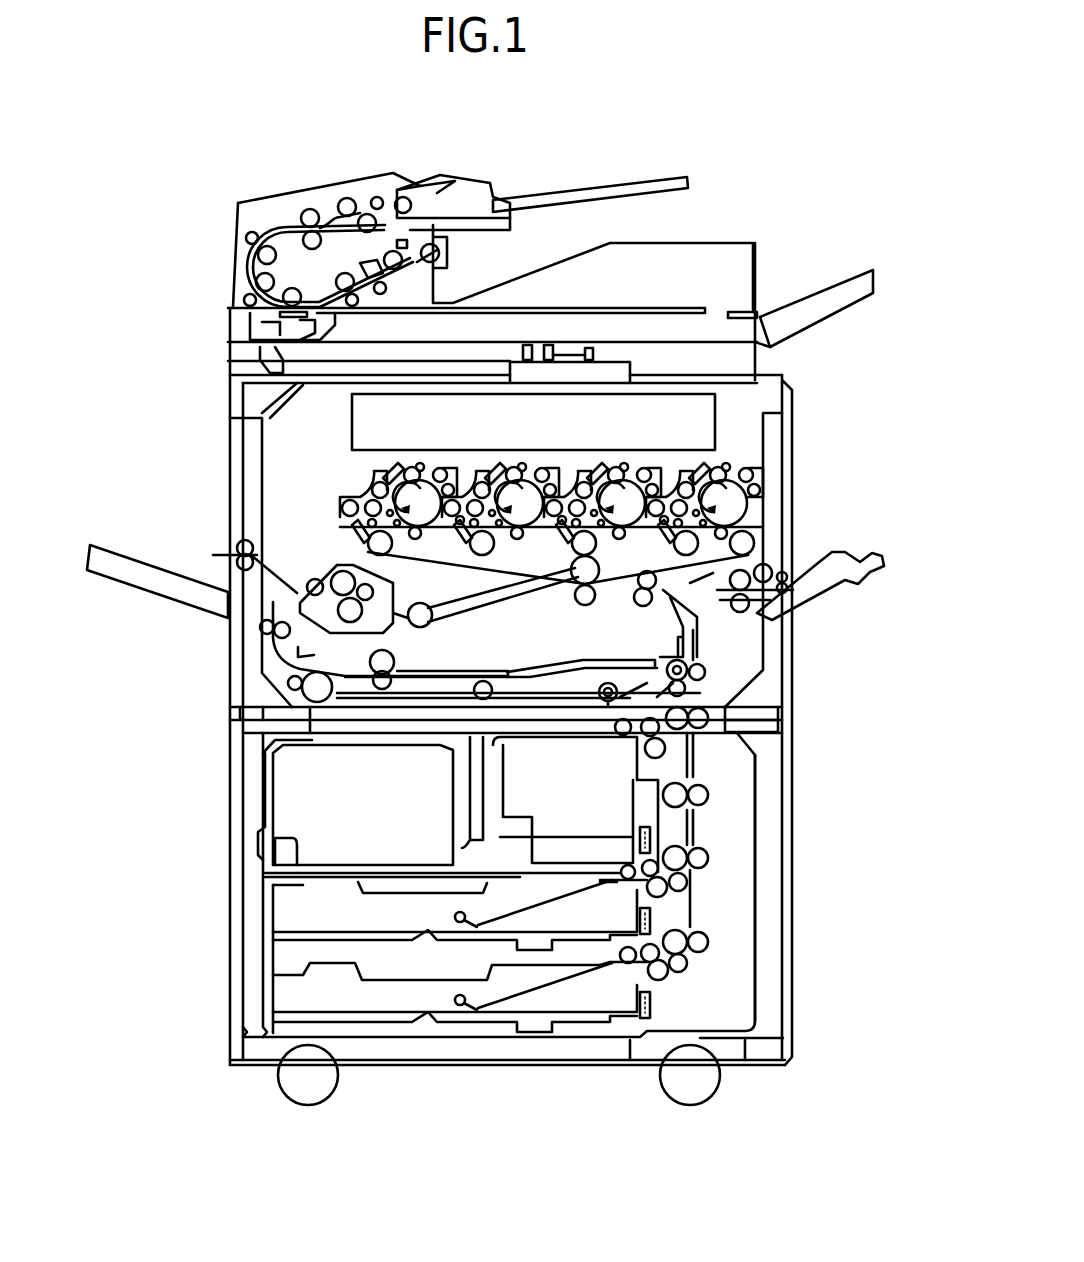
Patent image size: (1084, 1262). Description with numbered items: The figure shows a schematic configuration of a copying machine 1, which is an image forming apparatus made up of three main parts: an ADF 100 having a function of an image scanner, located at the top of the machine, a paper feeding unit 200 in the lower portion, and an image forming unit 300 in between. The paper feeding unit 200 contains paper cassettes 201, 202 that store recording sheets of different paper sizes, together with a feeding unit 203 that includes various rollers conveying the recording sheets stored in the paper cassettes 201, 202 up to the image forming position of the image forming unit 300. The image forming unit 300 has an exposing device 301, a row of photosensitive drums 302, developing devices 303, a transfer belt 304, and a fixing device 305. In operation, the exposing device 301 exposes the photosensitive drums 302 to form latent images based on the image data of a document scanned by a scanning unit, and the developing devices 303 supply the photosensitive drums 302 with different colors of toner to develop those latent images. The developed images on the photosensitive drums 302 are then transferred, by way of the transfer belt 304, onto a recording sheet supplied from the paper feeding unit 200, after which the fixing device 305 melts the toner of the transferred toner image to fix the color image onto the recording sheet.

The copying machine 1 is at (739, 176).
The ADF 100 is at (228, 239).
The paper feeding unit 200 is at (224, 890).
The paper cassette 201 is at (487, 1030).
The paper cassette 202 is at (385, 940).
The feeding unit 203 is at (712, 842).
The image forming unit 300 is at (222, 628).
The exposing device 301 is at (353, 427).
The photosensitive drum 302 is at (443, 527).
The developing device 303 is at (447, 465).
The transfer belt 304 is at (440, 557).
The fixing device 305 is at (327, 572).